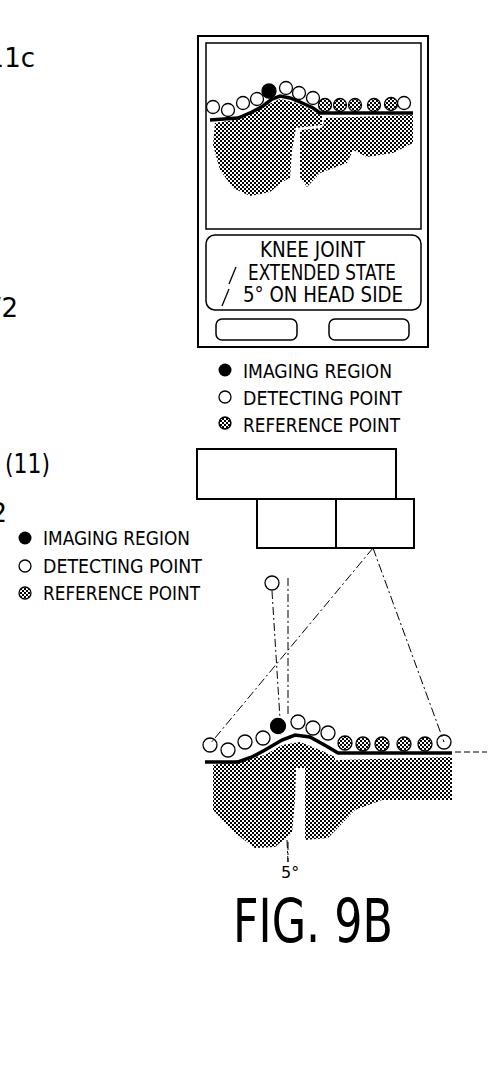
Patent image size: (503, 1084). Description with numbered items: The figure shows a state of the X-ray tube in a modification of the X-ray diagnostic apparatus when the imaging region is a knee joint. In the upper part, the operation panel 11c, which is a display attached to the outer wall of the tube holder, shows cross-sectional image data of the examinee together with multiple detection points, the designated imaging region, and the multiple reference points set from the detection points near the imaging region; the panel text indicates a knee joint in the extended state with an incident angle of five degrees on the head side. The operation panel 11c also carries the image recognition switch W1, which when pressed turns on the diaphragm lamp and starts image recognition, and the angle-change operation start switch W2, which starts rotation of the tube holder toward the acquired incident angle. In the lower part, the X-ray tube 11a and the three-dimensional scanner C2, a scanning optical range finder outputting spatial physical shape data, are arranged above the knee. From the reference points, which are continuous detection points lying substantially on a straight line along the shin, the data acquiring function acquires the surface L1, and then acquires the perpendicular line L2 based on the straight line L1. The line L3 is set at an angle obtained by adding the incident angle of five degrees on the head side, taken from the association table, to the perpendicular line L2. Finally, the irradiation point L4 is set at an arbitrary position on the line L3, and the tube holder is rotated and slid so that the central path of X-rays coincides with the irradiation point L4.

The operation panel 11c is at (428, 64).
The image recognition switch W1 is at (199, 325).
The angle-change operation start switch W2 is at (408, 328).
The X-ray tube 11a is at (396, 473).
The 3D scanner C2 is at (414, 522).
The surface L1 is at (467, 751).
The perpendicular line L2 is at (289, 681).
The line L3 is at (275, 637).
The irradiation point L4 is at (265, 586).